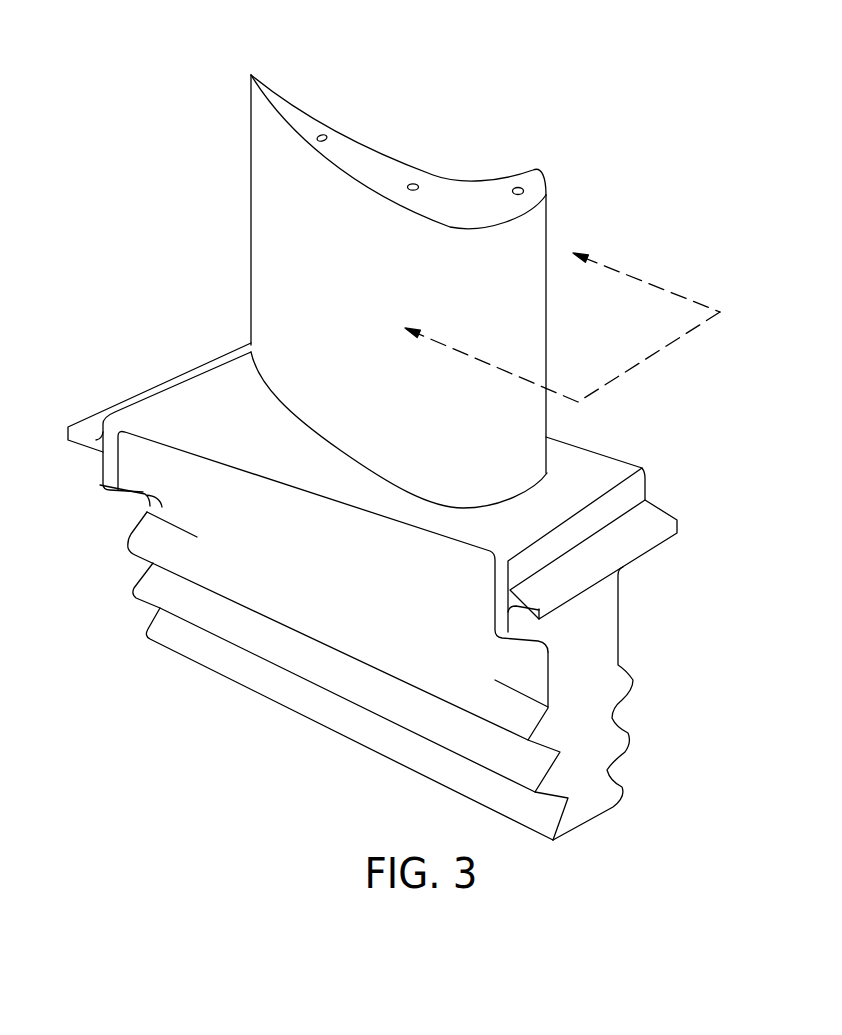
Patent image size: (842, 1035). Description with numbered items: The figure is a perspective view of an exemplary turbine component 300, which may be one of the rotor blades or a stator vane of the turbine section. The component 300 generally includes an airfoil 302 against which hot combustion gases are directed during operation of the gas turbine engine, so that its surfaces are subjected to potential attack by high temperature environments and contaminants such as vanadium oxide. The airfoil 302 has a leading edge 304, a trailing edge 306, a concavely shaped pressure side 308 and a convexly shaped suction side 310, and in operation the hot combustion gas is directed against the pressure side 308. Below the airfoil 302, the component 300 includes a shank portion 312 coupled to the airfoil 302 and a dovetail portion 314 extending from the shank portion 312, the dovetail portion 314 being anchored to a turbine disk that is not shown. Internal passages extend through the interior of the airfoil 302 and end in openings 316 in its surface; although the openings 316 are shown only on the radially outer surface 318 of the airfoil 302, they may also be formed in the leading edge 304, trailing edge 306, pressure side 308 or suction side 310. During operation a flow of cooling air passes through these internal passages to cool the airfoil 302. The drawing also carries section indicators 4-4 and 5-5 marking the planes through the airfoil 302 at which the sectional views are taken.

The turbine component 300 is at (568, 60).
The airfoil 302 is at (270, 232).
The leading edge 304 is at (547, 233).
The trailing edge 306 is at (250, 120).
The pressure side 308 is at (342, 133).
The suction side 310 is at (302, 267).
The shank portion 312 is at (597, 465).
The dovetail portion 314 is at (626, 697).
The openings 316 is at (517, 187).
The radially outer surface 318 is at (373, 160).
The section line 4-4 is at (655, 355).
The section line 5-5 is at (658, 288).